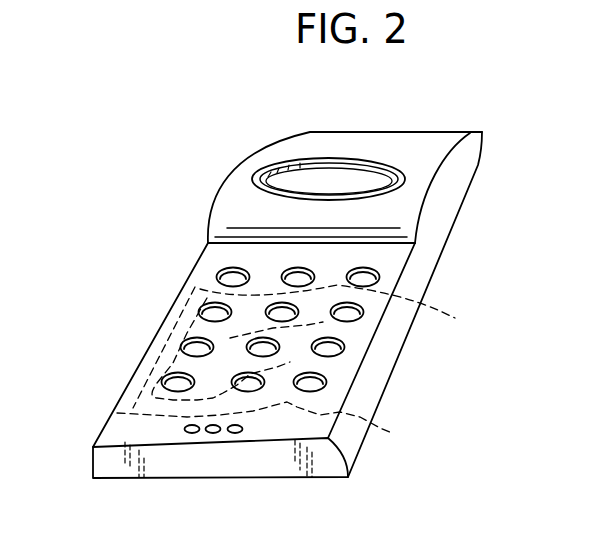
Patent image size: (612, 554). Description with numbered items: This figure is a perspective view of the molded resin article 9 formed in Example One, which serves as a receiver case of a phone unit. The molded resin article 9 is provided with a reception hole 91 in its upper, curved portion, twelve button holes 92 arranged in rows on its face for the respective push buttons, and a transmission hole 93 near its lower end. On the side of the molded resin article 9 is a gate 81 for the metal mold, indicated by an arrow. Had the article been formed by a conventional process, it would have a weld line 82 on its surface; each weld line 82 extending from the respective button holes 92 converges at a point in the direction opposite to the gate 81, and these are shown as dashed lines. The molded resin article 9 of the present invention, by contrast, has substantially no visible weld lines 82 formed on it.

The molded resin article 9 is at (211, 162).
The gate 81 is at (441, 252).
The weld line 82 is at (160, 315).
The reception hole 91 is at (328, 177).
The button holes 92 is at (226, 271).
The transmission hole 93 is at (213, 433).